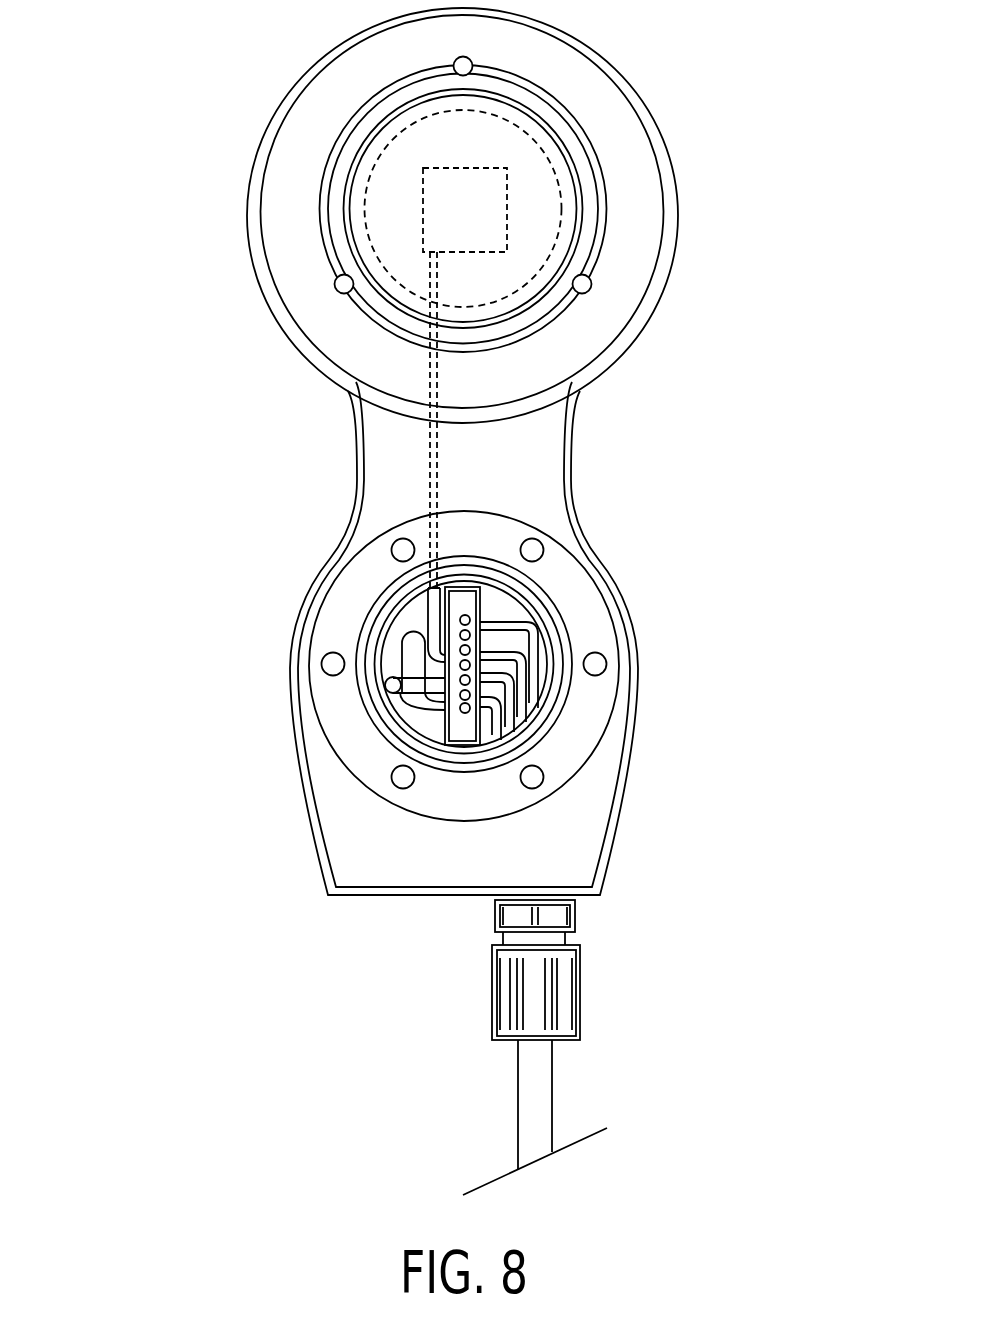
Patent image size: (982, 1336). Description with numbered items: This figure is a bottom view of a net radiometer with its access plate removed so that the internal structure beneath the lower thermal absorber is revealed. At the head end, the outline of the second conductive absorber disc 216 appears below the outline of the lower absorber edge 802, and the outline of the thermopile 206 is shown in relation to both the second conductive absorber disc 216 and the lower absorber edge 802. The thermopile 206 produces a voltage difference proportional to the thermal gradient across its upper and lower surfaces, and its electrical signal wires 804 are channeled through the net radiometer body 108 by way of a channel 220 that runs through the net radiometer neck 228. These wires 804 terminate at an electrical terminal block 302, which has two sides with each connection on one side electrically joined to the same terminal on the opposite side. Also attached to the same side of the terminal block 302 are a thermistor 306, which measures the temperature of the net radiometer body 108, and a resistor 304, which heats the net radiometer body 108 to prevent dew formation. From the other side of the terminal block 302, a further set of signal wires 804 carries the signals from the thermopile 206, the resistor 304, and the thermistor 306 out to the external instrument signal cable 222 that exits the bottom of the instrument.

The net radiometer body 108 is at (253, 163).
The thermopile 206 is at (508, 197).
The second conductive absorber disc 216 is at (373, 237).
The channel 220 is at (427, 438).
The net radiometer neck 228 is at (573, 492).
The lower absorber edge 802 is at (583, 247).
The electrical terminal block 302 is at (447, 722).
The resistor 304 is at (400, 660).
The thermistor 306 is at (390, 685).
The electrical signal wires 804 is at (543, 685).
The external instrument signal cable 222 is at (515, 1057).